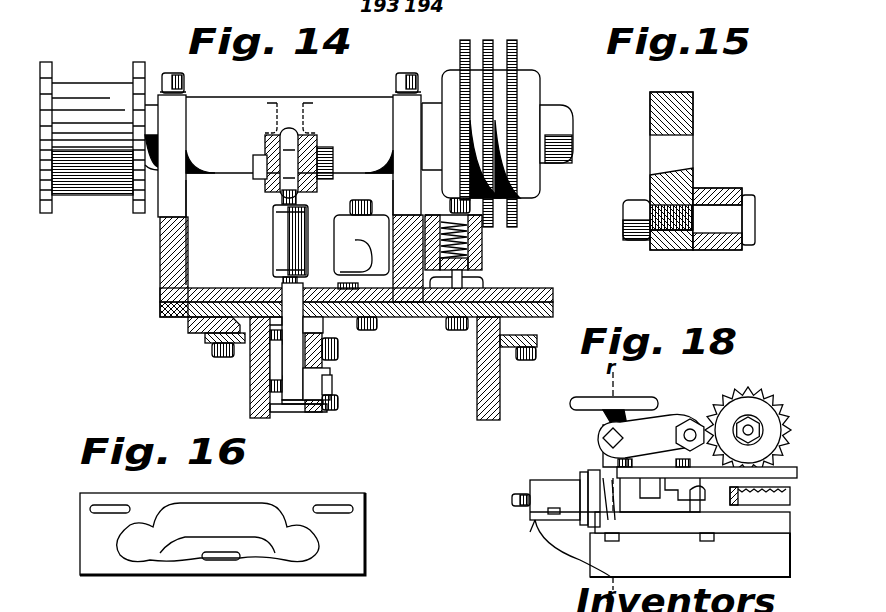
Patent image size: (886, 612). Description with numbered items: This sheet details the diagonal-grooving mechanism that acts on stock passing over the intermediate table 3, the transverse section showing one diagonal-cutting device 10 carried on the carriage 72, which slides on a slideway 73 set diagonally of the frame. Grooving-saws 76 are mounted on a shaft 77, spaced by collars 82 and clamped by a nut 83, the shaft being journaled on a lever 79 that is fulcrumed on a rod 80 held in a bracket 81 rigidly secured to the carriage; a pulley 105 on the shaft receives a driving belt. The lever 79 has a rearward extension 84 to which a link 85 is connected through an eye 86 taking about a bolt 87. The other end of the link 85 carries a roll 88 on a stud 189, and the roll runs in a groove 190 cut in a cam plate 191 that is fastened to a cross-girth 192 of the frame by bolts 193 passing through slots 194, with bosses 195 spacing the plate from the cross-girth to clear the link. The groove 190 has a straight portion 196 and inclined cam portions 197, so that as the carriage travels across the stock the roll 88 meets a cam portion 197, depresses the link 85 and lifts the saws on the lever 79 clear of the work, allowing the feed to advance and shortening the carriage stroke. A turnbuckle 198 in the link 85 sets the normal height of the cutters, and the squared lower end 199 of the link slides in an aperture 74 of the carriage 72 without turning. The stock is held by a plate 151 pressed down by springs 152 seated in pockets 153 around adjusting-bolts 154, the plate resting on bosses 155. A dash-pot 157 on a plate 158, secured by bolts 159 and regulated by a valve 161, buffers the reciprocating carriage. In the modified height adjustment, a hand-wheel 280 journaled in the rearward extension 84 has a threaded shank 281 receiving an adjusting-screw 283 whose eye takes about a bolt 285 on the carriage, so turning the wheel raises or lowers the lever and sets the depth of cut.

In FIG. 18, the intermediate table 3 is at (792, 496).
In FIG. 18, the diagonal-cutting device 10 is at (757, 420).
In FIG. 14, the carriage 72 is at (190, 320).
In FIG. 18, the carriage 72 is at (692, 525).
In FIG. 14, the slideway 73 is at (205, 338).
In FIG. 18, the slideway 73 is at (690, 555).
In FIG. 14, the aperture 74 is at (284, 288).
In FIG. 14, the grooving-saws 76 is at (510, 42).
In FIG. 18, the grooving-saws 76 is at (745, 390).
In FIG. 18, the shaft 77 is at (762, 428).
In FIG. 14, the lever 79 is at (210, 108).
In FIG. 18, the rod 80 is at (690, 428).
In FIG. 14, the bracket 81 is at (289, 145).
In FIG. 18, the bracket 81 is at (654, 442).
In FIG. 14, the collars 82 is at (497, 78).
In FIG. 14, the nut 83 is at (557, 110).
In FIG. 18, the nut 83 is at (752, 430).
In FIG. 14, the rearward extension 84 is at (316, 136).
In FIG. 18, the rearward extension 84 is at (630, 435).
In FIG. 14, the link 85 is at (280, 197).
In FIG. 15, the link 85 is at (650, 190).
In FIG. 14, the eye 86 is at (266, 144).
In FIG. 14, the bolt 87 is at (330, 160).
In FIG. 14, the roll 88 is at (320, 382).
In FIG. 15, the roll 88 is at (716, 250).
In FIG. 14, the pulley 105 is at (136, 62).
In FIG. 14, the plate 151 is at (380, 227).
In FIG. 18, the plate 151 is at (700, 471).
In FIG. 14, the springs 152 is at (485, 241).
In FIG. 18, the springs 152 is at (707, 472).
In FIG. 14, the pockets 153 is at (528, 262).
In FIG. 18, the pockets 153 is at (695, 490).
In FIG. 14, the adjusting-bolts 154 is at (453, 205).
In FIG. 18, the adjusting-bolts 154 is at (654, 456).
In FIG. 14, the bosses 155 is at (486, 283).
In FIG. 18, the bosses 155 is at (632, 490).
In FIG. 18, the dash-pot 157 is at (538, 482).
In FIG. 18, the plate 158 is at (540, 514).
In FIG. 18, the bolts 159 is at (556, 508).
In FIG. 18, the valve 161 is at (512, 499).
In FIG. 14, the stud 189 is at (340, 387).
In FIG. 15, the stud 189 is at (712, 212).
In FIG. 14, the groove 190 is at (318, 372).
In FIG. 16, the groove 190 is at (200, 503).
In FIG. 14, the plate 191 is at (322, 413).
In FIG. 16, the plate 191 is at (350, 540).
In FIG. 14, the cross-girth 192 is at (250, 390).
In FIG. 14, the bolts 193 is at (340, 402).
In FIG. 16, the slots 194 is at (90, 510).
In FIG. 14, the bosses 195 is at (275, 348).
In FIG. 16, the straight portion 196 is at (205, 537).
In FIG. 16, the cam portions 197 is at (168, 540).
In FIG. 14, the turnbuckle 198 is at (280, 231).
In FIG. 14, the squared lower end 199 is at (165, 305).
In FIG. 15, the squared lower end 199 is at (683, 152).
In FIG. 18, the hand-wheel 280 is at (574, 397).
In FIG. 18, the shank 281 is at (605, 422).
In FIG. 18, the adjusting-screw 283 is at (612, 478).
In FIG. 18, the bolt 285 is at (600, 510).